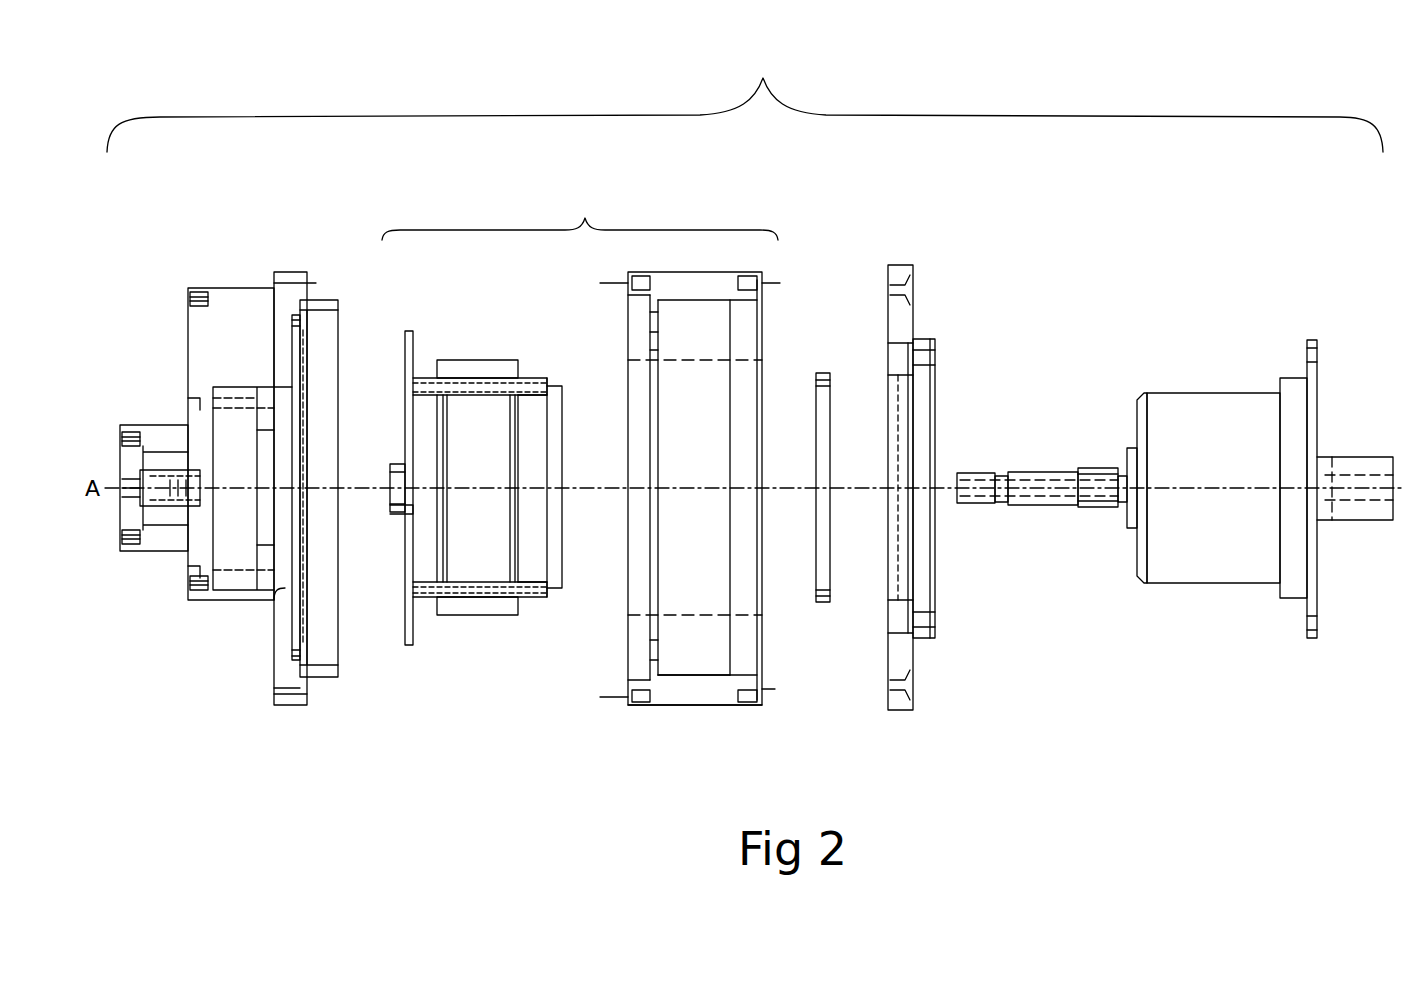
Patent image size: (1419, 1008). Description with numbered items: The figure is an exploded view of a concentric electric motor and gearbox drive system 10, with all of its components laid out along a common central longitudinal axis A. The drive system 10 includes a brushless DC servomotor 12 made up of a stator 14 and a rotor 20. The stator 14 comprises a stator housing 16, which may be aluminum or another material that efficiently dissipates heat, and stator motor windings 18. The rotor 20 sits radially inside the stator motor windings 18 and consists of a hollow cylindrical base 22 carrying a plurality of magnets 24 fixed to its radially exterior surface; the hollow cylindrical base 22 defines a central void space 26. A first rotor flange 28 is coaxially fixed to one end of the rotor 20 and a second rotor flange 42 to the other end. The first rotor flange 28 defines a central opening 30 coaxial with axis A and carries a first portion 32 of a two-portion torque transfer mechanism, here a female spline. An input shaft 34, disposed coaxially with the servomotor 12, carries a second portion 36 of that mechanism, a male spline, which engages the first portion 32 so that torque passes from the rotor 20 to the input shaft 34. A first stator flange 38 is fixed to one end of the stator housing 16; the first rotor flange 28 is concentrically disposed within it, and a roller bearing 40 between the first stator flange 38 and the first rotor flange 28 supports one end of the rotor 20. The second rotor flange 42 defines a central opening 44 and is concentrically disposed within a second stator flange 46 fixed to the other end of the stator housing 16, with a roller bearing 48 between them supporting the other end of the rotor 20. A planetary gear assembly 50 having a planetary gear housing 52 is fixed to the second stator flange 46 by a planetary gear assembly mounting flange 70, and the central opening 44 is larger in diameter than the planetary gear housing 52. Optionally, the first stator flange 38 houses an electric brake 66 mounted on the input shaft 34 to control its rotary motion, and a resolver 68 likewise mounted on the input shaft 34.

The concentric electric motor and gearbox drive system 10 is at (745, 100).
The brushless DC servomotor 12 is at (580, 216).
The stator 14 is at (740, 718).
The stator housing 16 is at (678, 706).
The stator motor windings 18 is at (705, 655).
The rotor 20 is at (470, 358).
The hollow cylindrical base 22 is at (512, 600).
The magnets 24 is at (490, 600).
The central void space 26 is at (468, 528).
The first rotor flange 28 is at (408, 333).
The central opening 30 is at (393, 466).
The first portion of the two-portion torque transfer mechanism 32 is at (398, 512).
The input shaft 34 is at (1047, 545).
The second portion of the two-portion torque transfer mechanism 36 is at (1103, 467).
The first stator flange 38 is at (292, 262).
The roller bearing 40 is at (310, 652).
The second rotor flange 42 is at (520, 378).
The central opening 44 is at (535, 450).
The second stator flange 46 is at (905, 262).
The roller bearing 48 is at (822, 373).
The planetary gear assembly 50 is at (1205, 380).
The planetary gear housing 52 is at (1222, 565).
The electric brake 66 is at (240, 560).
The resolver 68 is at (170, 545).
The planetary gear assembly mounting flange 70 is at (1312, 340).